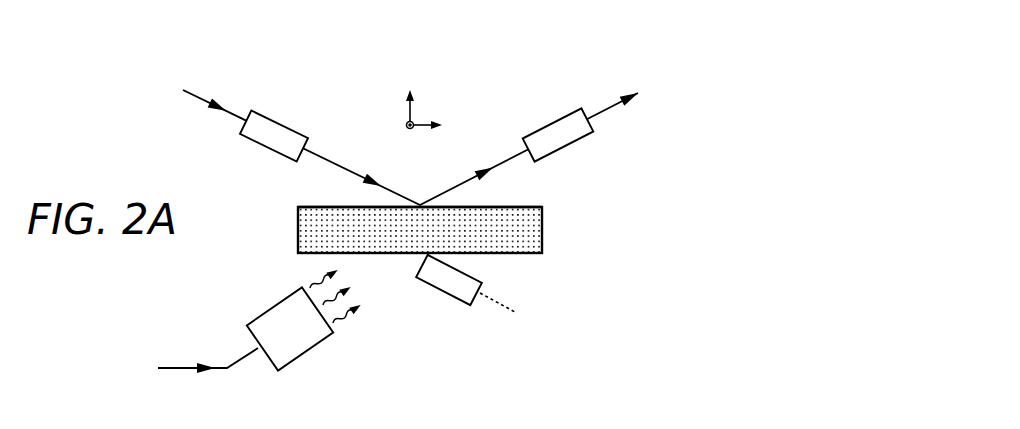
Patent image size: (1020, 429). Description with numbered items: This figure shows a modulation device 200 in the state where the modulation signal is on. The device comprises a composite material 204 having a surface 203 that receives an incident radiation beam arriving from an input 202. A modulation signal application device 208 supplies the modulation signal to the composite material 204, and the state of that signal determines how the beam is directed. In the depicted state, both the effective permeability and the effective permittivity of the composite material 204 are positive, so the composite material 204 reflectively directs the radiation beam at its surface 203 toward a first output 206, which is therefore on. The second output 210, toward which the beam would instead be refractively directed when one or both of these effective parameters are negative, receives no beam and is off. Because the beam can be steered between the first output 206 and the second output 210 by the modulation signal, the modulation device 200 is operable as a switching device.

The modulation device 200 is at (340, 44).
The input 202 is at (282, 125).
The surface 203 is at (515, 207).
The composite material 204 is at (542, 232).
The first output 206 is at (537, 128).
The modulation signal application device 208 is at (267, 305).
The second output 210 is at (452, 298).